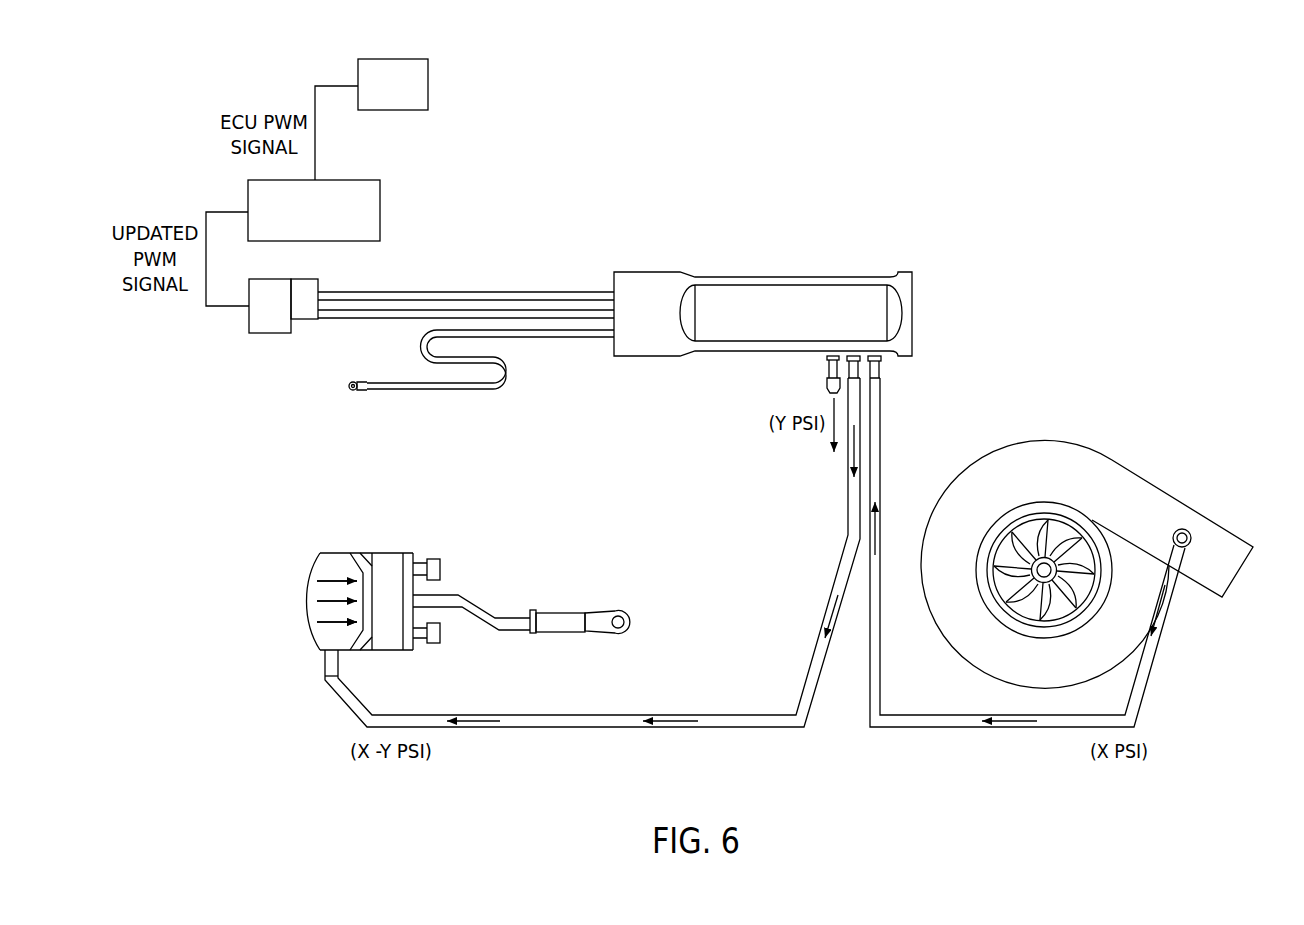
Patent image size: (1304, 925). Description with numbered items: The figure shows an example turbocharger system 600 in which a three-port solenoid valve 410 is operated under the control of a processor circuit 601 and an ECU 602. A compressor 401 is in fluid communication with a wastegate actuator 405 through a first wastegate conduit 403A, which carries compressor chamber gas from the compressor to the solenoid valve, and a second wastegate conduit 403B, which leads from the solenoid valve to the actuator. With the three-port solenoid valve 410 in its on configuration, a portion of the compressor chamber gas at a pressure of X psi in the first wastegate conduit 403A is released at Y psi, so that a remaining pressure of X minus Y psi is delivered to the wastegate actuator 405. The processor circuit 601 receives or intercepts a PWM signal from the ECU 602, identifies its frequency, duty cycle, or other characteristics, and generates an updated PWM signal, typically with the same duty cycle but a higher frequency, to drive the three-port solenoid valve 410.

The example turbocharger system 600 is at (1113, 155).
The processor circuit 601 is at (340, 180).
The ECU 602 is at (395, 58).
The three-port solenoid valve 410 is at (790, 277).
The wastegate actuator 405 is at (388, 553).
The compressor 401 is at (1117, 452).
The first wastegate conduit 403A is at (1002, 727).
The second wastegate conduit 403B is at (585, 727).